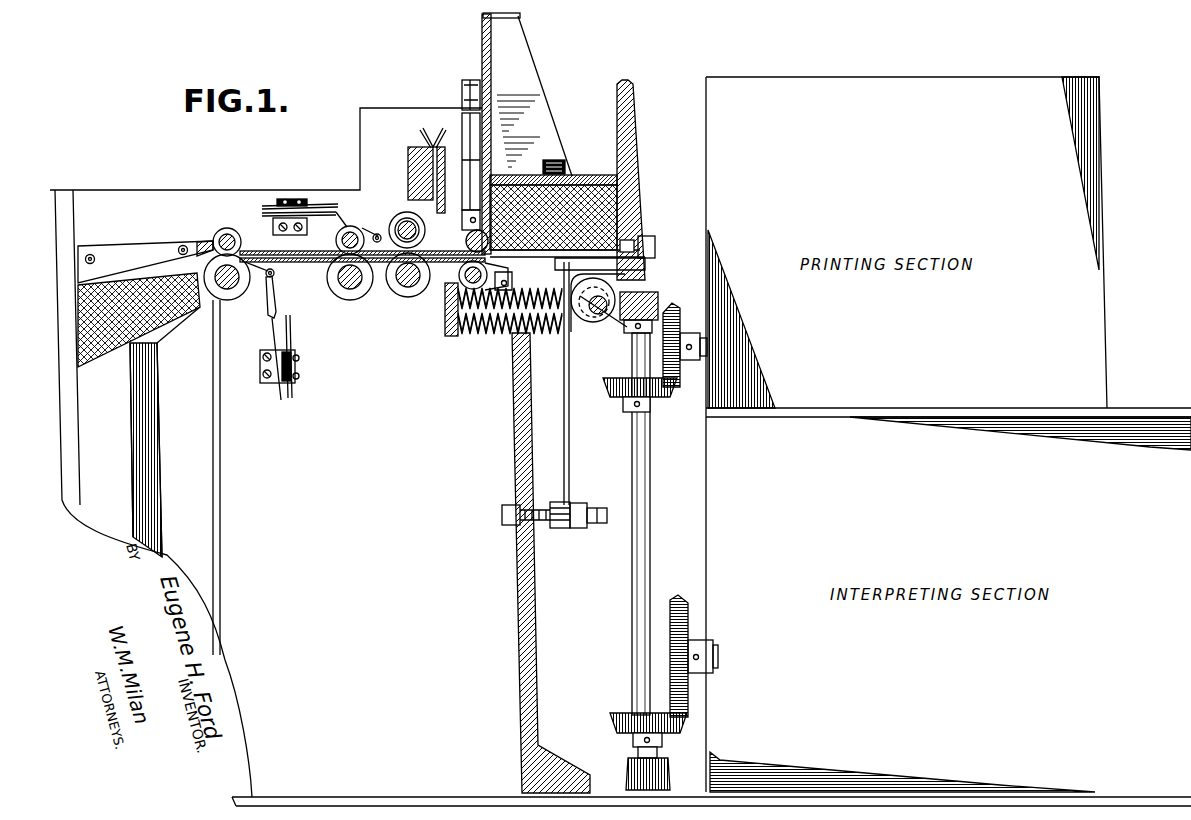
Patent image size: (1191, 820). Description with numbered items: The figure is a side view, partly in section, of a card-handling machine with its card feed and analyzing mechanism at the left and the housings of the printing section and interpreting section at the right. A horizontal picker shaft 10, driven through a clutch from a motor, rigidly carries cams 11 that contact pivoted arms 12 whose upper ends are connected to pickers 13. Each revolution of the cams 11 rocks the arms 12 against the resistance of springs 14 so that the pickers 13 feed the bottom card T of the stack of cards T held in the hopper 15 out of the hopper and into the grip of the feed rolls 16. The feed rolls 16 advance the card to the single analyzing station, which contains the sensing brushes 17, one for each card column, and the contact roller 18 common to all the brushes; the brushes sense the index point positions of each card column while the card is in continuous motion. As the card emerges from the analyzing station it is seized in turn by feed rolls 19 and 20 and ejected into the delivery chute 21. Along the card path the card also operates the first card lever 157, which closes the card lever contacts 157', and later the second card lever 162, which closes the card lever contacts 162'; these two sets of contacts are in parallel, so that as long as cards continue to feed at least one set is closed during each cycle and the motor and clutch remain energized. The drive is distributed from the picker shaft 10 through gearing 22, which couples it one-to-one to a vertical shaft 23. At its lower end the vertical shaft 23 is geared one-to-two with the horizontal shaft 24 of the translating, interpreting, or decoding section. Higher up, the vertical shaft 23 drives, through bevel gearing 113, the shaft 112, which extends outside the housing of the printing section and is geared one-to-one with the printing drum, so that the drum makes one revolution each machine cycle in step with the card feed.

The picker shaft 10 is at (598, 316).
The cams 11 is at (583, 281).
The pivoted arms 12 is at (570, 432).
The pickers 13 is at (640, 276).
The springs 14 is at (551, 331).
The hopper 15 is at (614, 157).
The feed rolls 16 is at (458, 278).
The sensing brushes 17 is at (399, 210).
The contact roller 18 is at (396, 291).
The feed rolls 19 is at (334, 290).
The feed rolls 20 is at (230, 300).
The delivery chute 21 is at (140, 270).
The gearing 22 is at (628, 328).
The vertical shaft 23 is at (651, 500).
The horizontal shaft 24 is at (697, 673).
The shaft 112 is at (703, 341).
The bevel gearing 113 is at (682, 389).
The first card lever 157 is at (361, 217).
The card lever contacts 157' is at (300, 201).
The second card lever 162 is at (280, 331).
The card lever contacts 162' is at (301, 356).
The card T is at (597, 197).